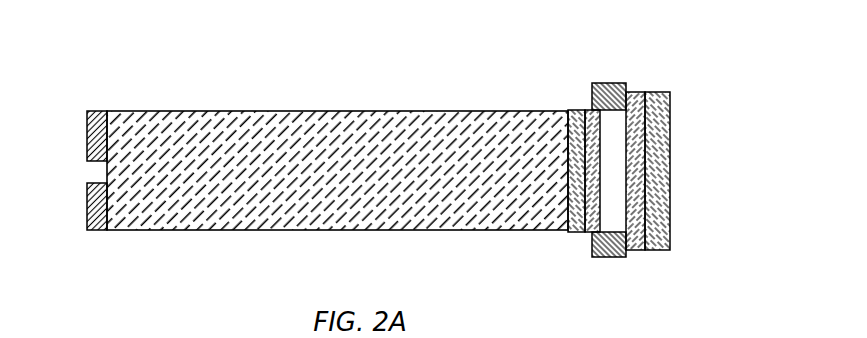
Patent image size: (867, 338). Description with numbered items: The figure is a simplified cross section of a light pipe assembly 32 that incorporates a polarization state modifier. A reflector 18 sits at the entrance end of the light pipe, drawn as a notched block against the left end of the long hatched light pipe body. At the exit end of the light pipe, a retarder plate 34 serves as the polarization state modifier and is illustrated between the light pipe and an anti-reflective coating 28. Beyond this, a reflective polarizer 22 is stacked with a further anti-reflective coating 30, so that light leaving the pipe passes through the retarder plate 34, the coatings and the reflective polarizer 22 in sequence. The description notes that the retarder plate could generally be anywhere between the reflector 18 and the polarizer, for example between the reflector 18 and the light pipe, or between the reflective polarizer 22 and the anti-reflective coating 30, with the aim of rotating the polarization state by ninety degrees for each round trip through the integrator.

The reflector 18 is at (94, 111).
The reflective polarizer 22 is at (659, 92).
The anti-reflective coating 28 is at (591, 234).
The anti-reflective coating 30 is at (637, 92).
The light pipe assembly 32 is at (468, 86).
The retarder plate 34 is at (577, 110).